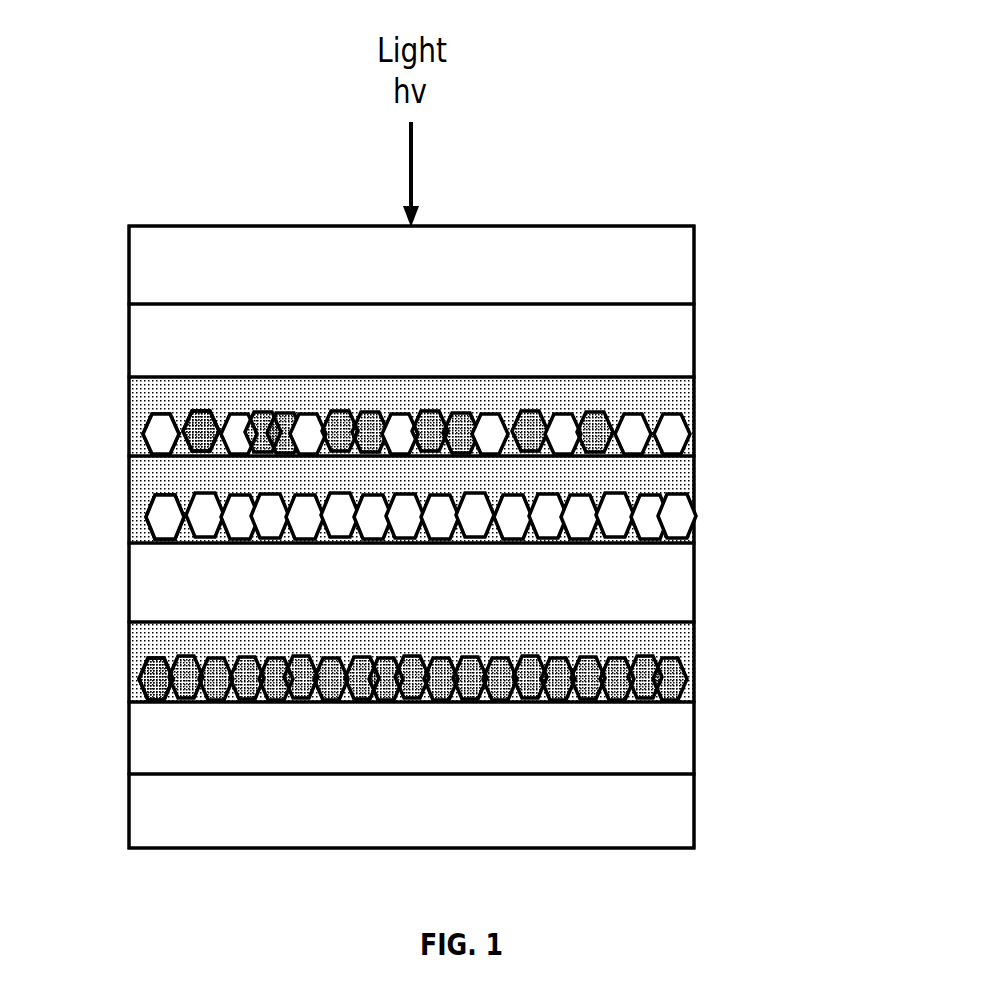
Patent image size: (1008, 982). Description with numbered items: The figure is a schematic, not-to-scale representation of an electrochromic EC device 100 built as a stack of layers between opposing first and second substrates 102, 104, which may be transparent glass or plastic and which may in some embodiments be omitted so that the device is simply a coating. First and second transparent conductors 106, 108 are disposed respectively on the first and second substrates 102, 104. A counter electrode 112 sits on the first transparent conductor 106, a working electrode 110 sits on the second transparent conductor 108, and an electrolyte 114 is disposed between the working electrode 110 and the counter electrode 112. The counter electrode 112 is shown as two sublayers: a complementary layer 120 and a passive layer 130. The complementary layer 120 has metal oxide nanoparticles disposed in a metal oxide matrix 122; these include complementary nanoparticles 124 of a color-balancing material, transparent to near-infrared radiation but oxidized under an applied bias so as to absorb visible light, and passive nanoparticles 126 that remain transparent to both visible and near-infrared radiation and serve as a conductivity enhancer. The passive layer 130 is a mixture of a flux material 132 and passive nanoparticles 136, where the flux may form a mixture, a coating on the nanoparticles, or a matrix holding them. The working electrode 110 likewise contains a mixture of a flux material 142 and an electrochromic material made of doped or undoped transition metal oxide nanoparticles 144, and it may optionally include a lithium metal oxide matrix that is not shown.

The EC device 100 is at (151, 173).
The first substrate 102 is at (694, 265).
The second substrate 104 is at (694, 810).
The first transparent conductor 106 is at (694, 337).
The second transparent conductor 108 is at (694, 737).
The working electrode 110 is at (439, 668).
The counter electrode 112 is at (465, 443).
The electrolyte 114 is at (694, 582).
The complementary layer 120 is at (415, 399).
The metal oxide matrix 122 is at (165, 394).
The complementary nanoparticles 124 is at (188, 418).
The passive nanoparticles 126 is at (145, 436).
The passive layer 130 is at (416, 499).
The flux material 132 is at (187, 480).
The passive nanoparticles 136 is at (150, 520).
The flux material 142 is at (170, 638).
The transition metal oxide nanoparticles 144 is at (140, 680).